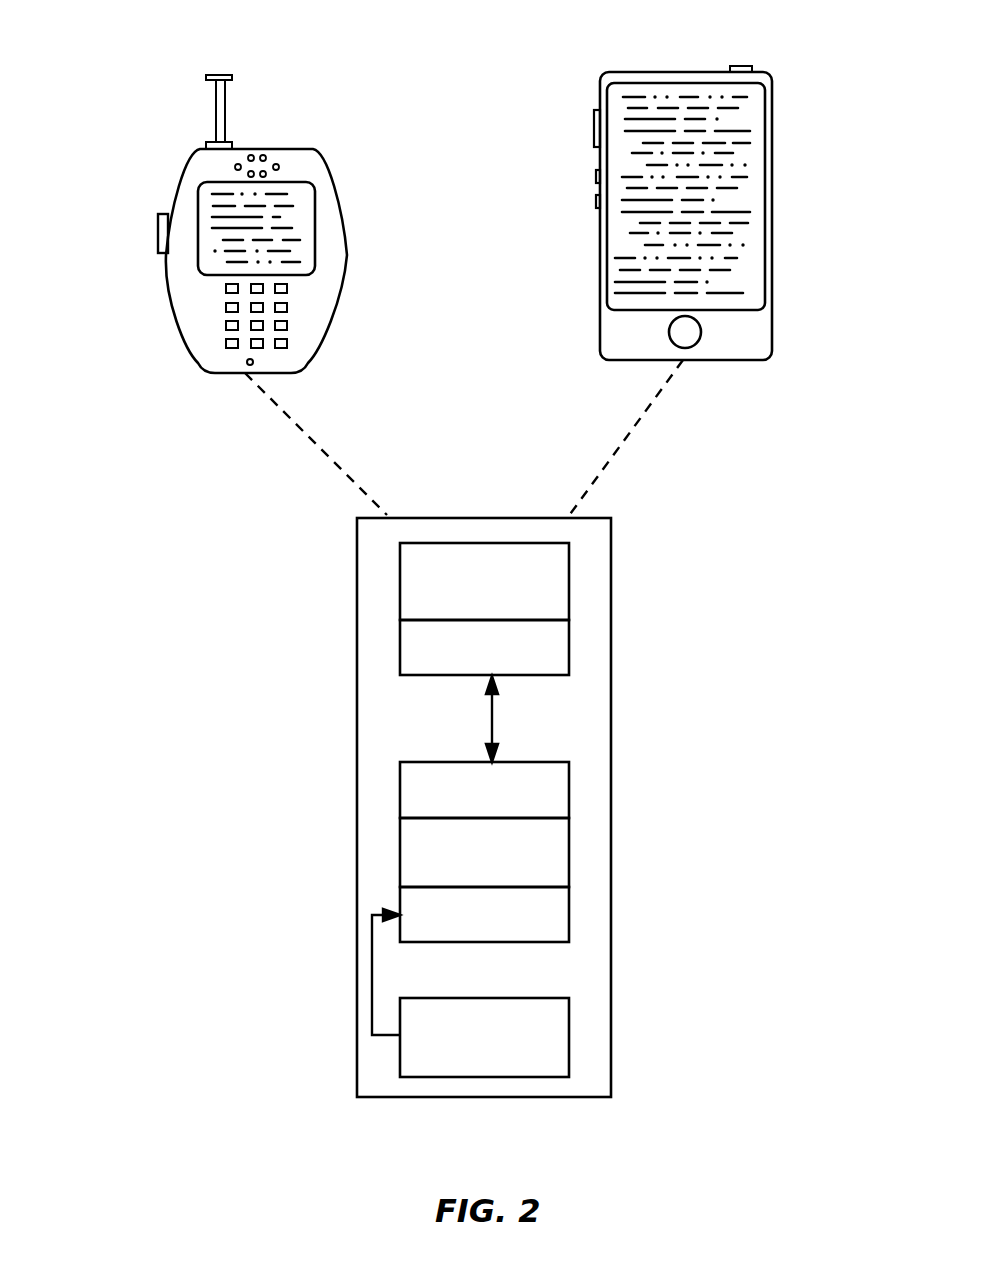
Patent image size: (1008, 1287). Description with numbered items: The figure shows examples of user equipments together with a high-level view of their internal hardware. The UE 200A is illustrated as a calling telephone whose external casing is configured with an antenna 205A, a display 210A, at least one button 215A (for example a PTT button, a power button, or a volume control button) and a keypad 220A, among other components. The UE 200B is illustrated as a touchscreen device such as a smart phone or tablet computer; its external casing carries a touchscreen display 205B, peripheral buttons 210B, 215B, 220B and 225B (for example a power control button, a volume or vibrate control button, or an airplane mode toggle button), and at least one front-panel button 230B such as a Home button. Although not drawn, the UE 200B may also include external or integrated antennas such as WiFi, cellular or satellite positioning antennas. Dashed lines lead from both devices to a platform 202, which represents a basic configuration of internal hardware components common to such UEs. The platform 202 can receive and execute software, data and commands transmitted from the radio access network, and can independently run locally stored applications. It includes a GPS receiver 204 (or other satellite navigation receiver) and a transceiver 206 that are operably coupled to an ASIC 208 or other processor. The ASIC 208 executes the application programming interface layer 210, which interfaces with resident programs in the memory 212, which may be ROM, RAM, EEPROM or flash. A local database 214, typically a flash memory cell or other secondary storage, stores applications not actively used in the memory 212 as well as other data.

The UE 200A is at (319, 353).
The antenna 205A is at (224, 98).
The display 210A is at (316, 225).
The button 215A is at (158, 235).
The keypad 220A is at (288, 307).
The UE 200B is at (646, 70).
The touchscreen display 205B is at (768, 105).
The peripheral button 210B is at (741, 66).
The peripheral button 215B is at (594, 130).
The peripheral button 220B is at (596, 176).
The peripheral button 225B is at (596, 200).
The front-panel button 230B is at (668, 333).
The platform 202 is at (357, 692).
The GPS receiver 204 is at (569, 580).
The transceiver 206 is at (569, 645).
The ASIC 208 is at (569, 790).
The application programming interface (API) layer 210 is at (569, 850).
The memory 212 is at (569, 915).
The local database 214 is at (569, 1035).